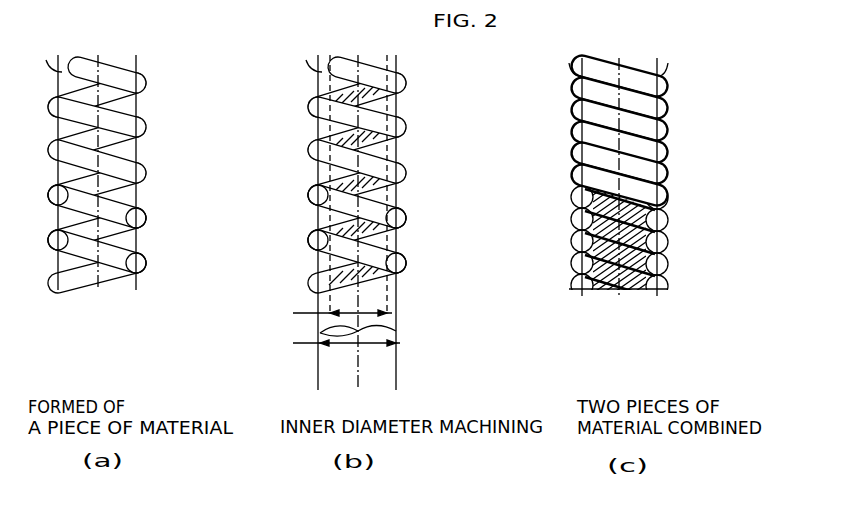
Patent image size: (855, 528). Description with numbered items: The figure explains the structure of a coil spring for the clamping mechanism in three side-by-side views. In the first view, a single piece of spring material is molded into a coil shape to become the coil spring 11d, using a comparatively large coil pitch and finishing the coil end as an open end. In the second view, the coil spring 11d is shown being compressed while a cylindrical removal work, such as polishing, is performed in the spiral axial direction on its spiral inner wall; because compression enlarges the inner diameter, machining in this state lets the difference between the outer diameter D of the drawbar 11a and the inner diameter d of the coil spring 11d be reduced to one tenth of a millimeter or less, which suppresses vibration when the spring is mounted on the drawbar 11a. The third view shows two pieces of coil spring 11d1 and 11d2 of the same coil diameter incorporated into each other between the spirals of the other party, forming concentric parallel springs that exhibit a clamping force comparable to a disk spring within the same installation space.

The coil spring 11d is at (141, 128).
The drawbar 11a is at (378, 368).
The first coil spring piece 11d1 is at (661, 130).
The second coil spring piece 11d2 is at (661, 157).